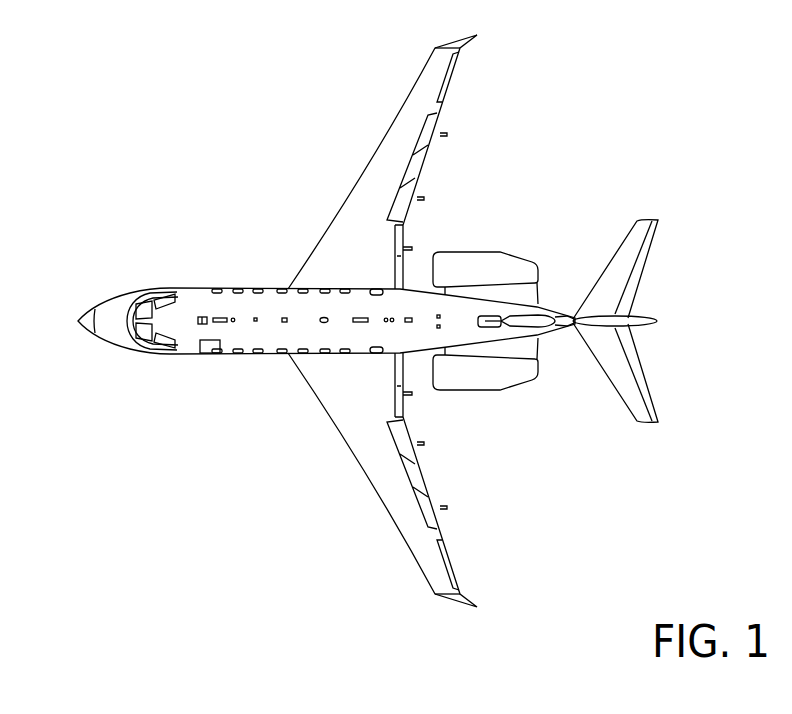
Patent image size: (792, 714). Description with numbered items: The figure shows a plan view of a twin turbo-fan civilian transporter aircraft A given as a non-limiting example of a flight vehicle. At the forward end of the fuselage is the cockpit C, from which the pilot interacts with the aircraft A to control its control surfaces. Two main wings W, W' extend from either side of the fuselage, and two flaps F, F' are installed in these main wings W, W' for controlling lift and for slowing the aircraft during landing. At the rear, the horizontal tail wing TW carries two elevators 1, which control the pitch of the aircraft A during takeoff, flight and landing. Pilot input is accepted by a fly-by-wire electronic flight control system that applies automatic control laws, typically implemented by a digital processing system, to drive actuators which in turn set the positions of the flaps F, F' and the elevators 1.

The aircraft A is at (210, 285).
The cockpit C is at (114, 342).
The main wing W is at (383, 480).
The main wing W' is at (387, 162).
The flap F is at (433, 505).
The flap F' is at (437, 137).
The horizontal tail wing TW is at (612, 253).
The elevator 1 is at (635, 363).